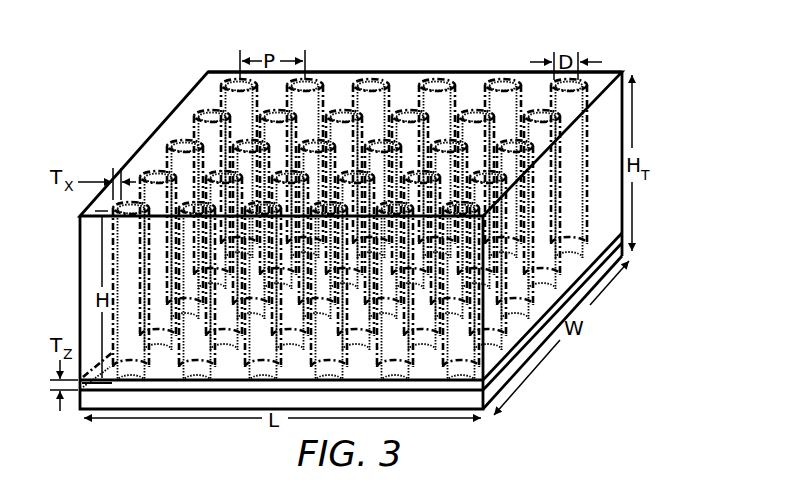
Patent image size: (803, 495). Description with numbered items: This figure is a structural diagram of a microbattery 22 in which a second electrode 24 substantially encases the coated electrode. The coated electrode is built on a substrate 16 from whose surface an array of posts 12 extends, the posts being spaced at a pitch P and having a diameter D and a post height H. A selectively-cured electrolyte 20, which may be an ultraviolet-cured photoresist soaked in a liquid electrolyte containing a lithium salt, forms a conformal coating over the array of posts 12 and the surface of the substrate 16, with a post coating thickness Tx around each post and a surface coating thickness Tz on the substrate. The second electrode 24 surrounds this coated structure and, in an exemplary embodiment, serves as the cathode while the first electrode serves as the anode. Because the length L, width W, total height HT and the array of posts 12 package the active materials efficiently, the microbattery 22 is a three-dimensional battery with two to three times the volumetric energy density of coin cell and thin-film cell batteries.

The array of posts 12 is at (228, 115).
The substrate 16 is at (567, 303).
The selectively-cured electrolyte 20 is at (583, 162).
The microbattery 22 is at (117, 79).
The second electrode 24 is at (622, 72).